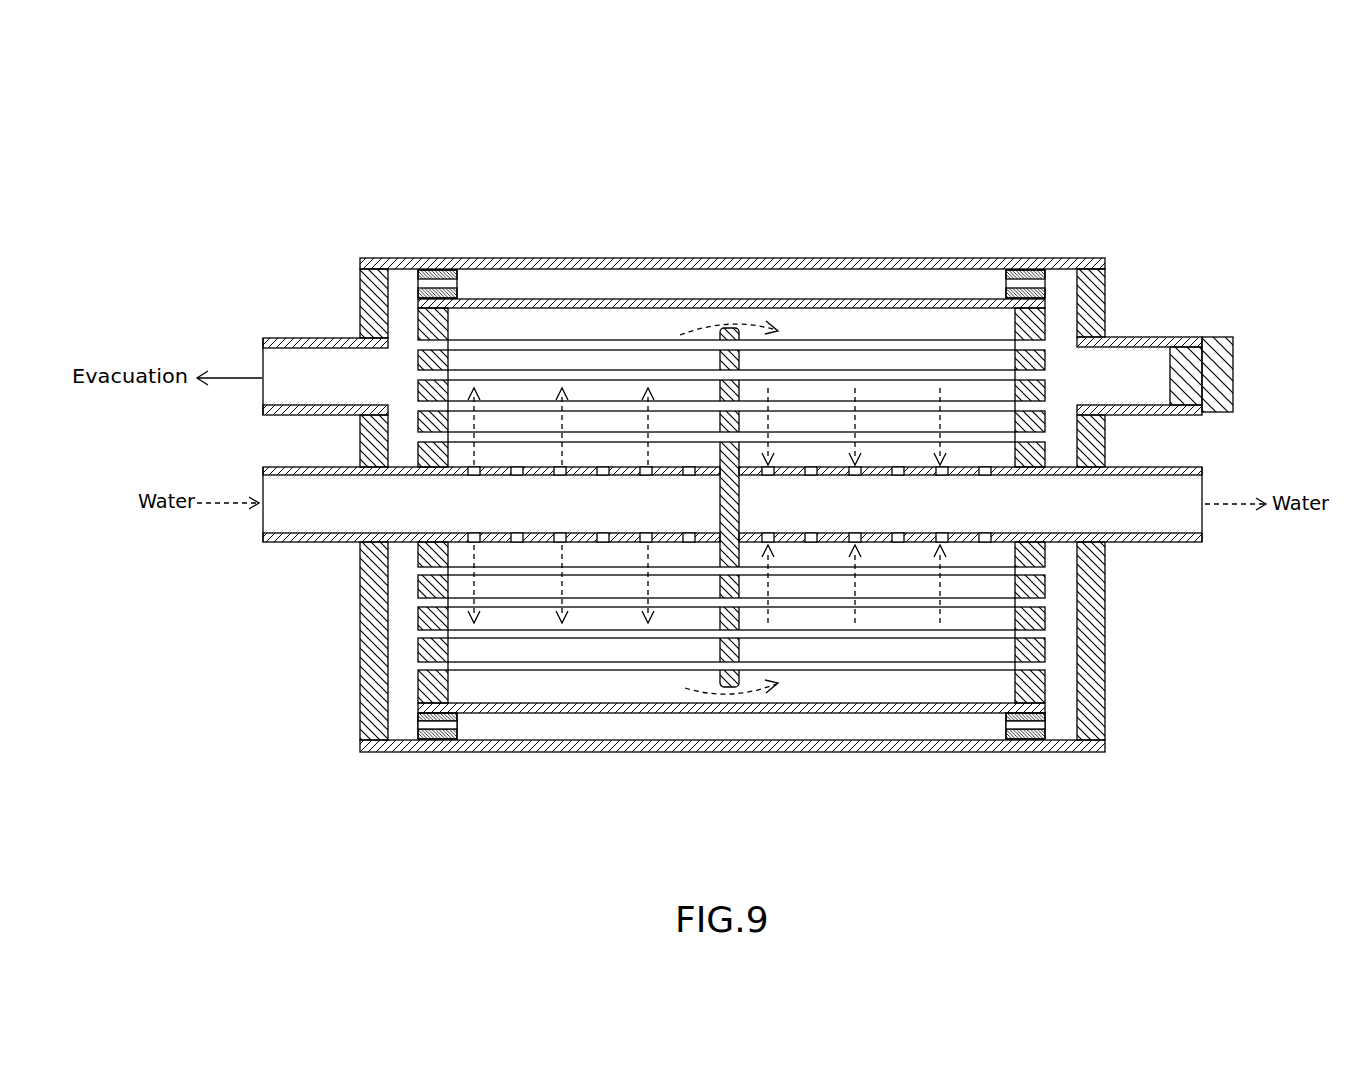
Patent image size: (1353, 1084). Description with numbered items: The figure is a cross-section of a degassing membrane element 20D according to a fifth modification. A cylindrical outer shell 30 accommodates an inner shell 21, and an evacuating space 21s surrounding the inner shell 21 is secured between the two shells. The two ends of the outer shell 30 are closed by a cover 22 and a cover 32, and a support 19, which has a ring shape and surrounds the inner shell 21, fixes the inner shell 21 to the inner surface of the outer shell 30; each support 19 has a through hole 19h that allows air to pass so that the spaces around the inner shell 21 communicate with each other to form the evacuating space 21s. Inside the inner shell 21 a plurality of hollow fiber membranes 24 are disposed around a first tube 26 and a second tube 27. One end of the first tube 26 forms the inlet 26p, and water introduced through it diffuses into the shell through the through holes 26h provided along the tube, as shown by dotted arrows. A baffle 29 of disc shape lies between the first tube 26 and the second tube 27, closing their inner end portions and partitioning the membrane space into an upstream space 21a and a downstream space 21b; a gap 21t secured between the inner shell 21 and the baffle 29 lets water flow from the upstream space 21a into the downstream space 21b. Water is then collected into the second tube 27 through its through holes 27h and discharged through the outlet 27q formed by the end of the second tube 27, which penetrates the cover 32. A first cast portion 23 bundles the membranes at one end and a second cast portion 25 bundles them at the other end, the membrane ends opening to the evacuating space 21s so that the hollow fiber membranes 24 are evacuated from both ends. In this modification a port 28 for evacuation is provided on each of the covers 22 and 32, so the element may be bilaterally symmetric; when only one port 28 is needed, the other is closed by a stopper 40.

The degassing membrane element 20D is at (1031, 133).
The support 19 is at (732, 783).
The through hole 19h is at (432, 728).
The shell 21 is at (732, 513).
The upstream space 21a is at (474, 320).
The downstream space 21b is at (963, 680).
The evacuating space 21s is at (401, 318).
The gap 21t is at (721, 300).
The cover 22 is at (373, 657).
The first cast portion 23 is at (1035, 318).
The hollow fiber membranes 24 is at (585, 373).
The second cast portion 25 is at (435, 690).
The first tube 26 is at (466, 507).
The through holes 26h is at (517, 467).
The inlet 26p is at (262, 487).
The second tube 27 is at (1003, 507).
The through holes 27h is at (810, 467).
The outlet 27q is at (1205, 522).
The port 28 is at (285, 338).
The baffle 29 is at (726, 690).
The outer shell 30 is at (1058, 258).
The cover 32 is at (1087, 678).
The stopper 40 is at (1215, 368).